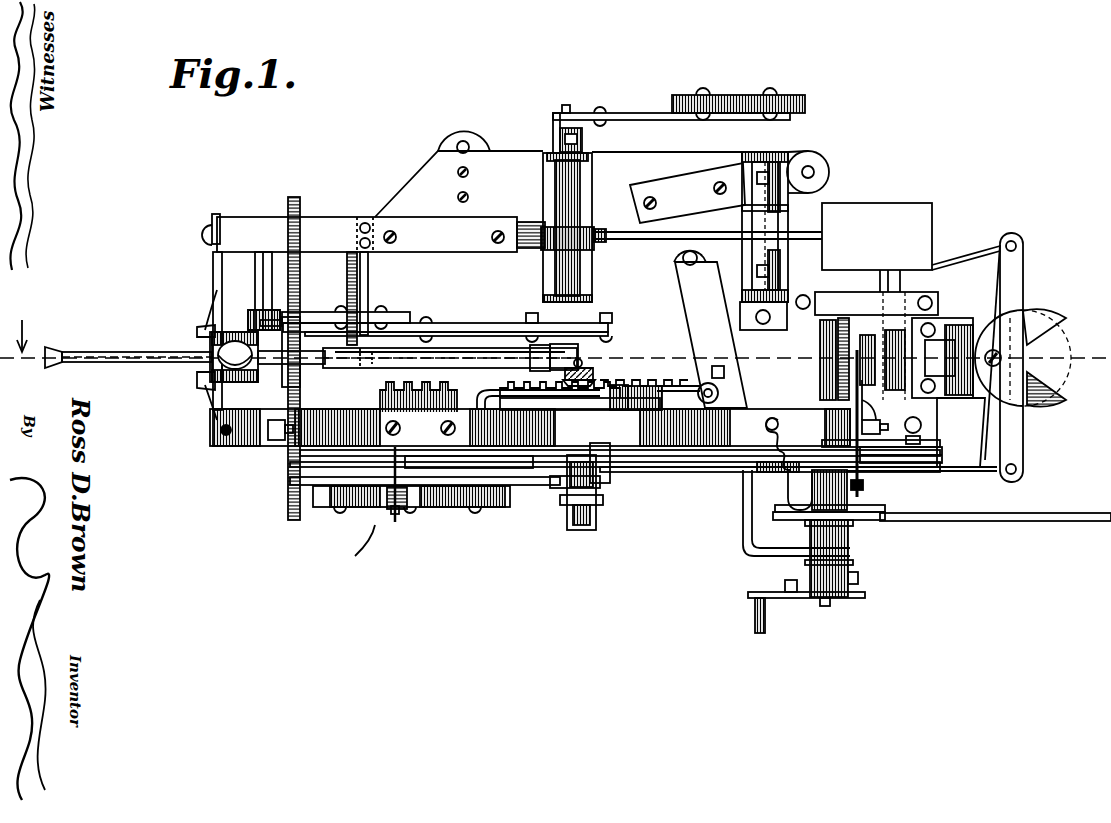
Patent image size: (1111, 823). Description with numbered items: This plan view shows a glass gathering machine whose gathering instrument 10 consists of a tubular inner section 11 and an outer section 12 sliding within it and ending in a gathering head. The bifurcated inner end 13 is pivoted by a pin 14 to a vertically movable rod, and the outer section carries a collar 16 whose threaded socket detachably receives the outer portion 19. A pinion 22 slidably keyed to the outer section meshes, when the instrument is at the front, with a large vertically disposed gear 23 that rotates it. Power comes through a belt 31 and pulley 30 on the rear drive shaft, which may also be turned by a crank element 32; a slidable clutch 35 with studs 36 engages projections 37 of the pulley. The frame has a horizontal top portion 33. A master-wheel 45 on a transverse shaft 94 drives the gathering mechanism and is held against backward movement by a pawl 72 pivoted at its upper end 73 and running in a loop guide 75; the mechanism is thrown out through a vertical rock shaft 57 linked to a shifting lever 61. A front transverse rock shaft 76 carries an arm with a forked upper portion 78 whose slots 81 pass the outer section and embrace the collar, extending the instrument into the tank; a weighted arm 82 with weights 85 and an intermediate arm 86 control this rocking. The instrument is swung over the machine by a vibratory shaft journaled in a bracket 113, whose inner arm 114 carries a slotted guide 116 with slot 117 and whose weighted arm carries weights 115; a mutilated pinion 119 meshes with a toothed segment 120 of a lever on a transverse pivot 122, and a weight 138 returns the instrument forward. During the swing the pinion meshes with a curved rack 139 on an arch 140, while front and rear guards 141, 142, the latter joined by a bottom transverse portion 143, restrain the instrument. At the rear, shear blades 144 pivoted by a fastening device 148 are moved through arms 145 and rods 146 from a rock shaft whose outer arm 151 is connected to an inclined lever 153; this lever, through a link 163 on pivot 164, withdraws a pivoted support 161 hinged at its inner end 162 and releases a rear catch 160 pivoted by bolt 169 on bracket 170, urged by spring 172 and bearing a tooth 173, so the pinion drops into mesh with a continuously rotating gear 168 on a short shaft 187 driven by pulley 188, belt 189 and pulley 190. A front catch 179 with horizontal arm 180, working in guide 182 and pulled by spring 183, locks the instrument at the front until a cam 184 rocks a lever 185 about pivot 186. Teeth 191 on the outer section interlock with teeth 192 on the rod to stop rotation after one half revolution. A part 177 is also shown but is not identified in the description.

The gathering instrument 10 is at (450, 350).
The inner section or member 11 is at (494, 350).
The outer section or member 12 is at (300, 370).
The inner end 13 is at (562, 350).
The pin 14 is at (582, 378).
The collar 16 is at (246, 346).
The outer portion 19 is at (72, 347).
The pinion 22 is at (300, 384).
The large vertically disposed gear 23 is at (294, 197).
The pulley 30 is at (878, 521).
The belt 31 is at (1053, 522).
The crank element 32 is at (806, 606).
The horizontal top portion 33 is at (472, 222).
The slidable clutch 35 is at (831, 554).
The projections or studs 36 is at (869, 488).
The projections 37 is at (870, 503).
The large gear or master-wheel 45 is at (640, 378).
The vertical rock shaft or pivot 57 is at (464, 141).
The shifting lever 61 is at (803, 492).
The pivoted pawl or dog 72 is at (580, 395).
The upper end 73 is at (612, 396).
The guide 75 is at (547, 398).
The front transverse rock shaft 76 is at (260, 285).
The forked upper portion 78 is at (205, 325).
The slots or openings 81 is at (210, 352).
The arm 82 is at (330, 480).
The weights 85 is at (457, 500).
The rearwardly extending arm 86 is at (262, 323).
The transverse shaft 94 is at (588, 522).
The bracket 113 is at (548, 155).
The arm 114 is at (460, 328).
The weights 115 is at (740, 95).
The slotted guide 116 is at (252, 318).
The slot 117 is at (318, 303).
The mutilated pinion 119 is at (543, 232).
The oscillatory toothed segment 120 is at (608, 242).
The transverse pivot 122 is at (778, 206).
The weight 138 is at (877, 236).
The curved rack 139 is at (395, 395).
The arch 140 is at (660, 460).
The front guards 141 is at (215, 285).
The rear guards 142 is at (943, 358).
The bottom transverse portion 143 is at (961, 432).
The movable blades or jaws 144 is at (1052, 322).
The laterally extending arms 145 is at (1022, 272).
The inwardly extending rods 146 is at (971, 258).
The fastening device 148 is at (996, 350).
The outer arm 151 is at (776, 512).
The inclined lever 153 is at (707, 473).
The rear catch 160 is at (930, 462).
The pivotally mounted buffer or support 161 is at (711, 335).
The inner end 162 is at (688, 262).
The short link 163 is at (688, 386).
The pivot 164 is at (657, 445).
The continuously rotating gear 168 is at (858, 322).
The bolt 169 is at (900, 430).
The arm or bracket 170 is at (793, 441).
The spring 172 is at (800, 460).
The tooth or engaging portion 173 is at (884, 423).
The plate 177 is at (948, 474).
The front catch 179 is at (368, 288).
The horizontal arm 180 is at (395, 522).
The horizontal guide 182 is at (360, 272).
The coiled spring 183 is at (369, 547).
The cam 184 is at (608, 470).
The longitudinally disposed lever 185 is at (470, 458).
The pivot 186 is at (512, 478).
The short longitudinally disposed shaft 187 is at (875, 348).
The pulley 188 is at (882, 400).
The belt 189 is at (901, 282).
The pulley 190 is at (880, 283).
The teeth 191 is at (535, 346).
The teeth 192 is at (580, 365).